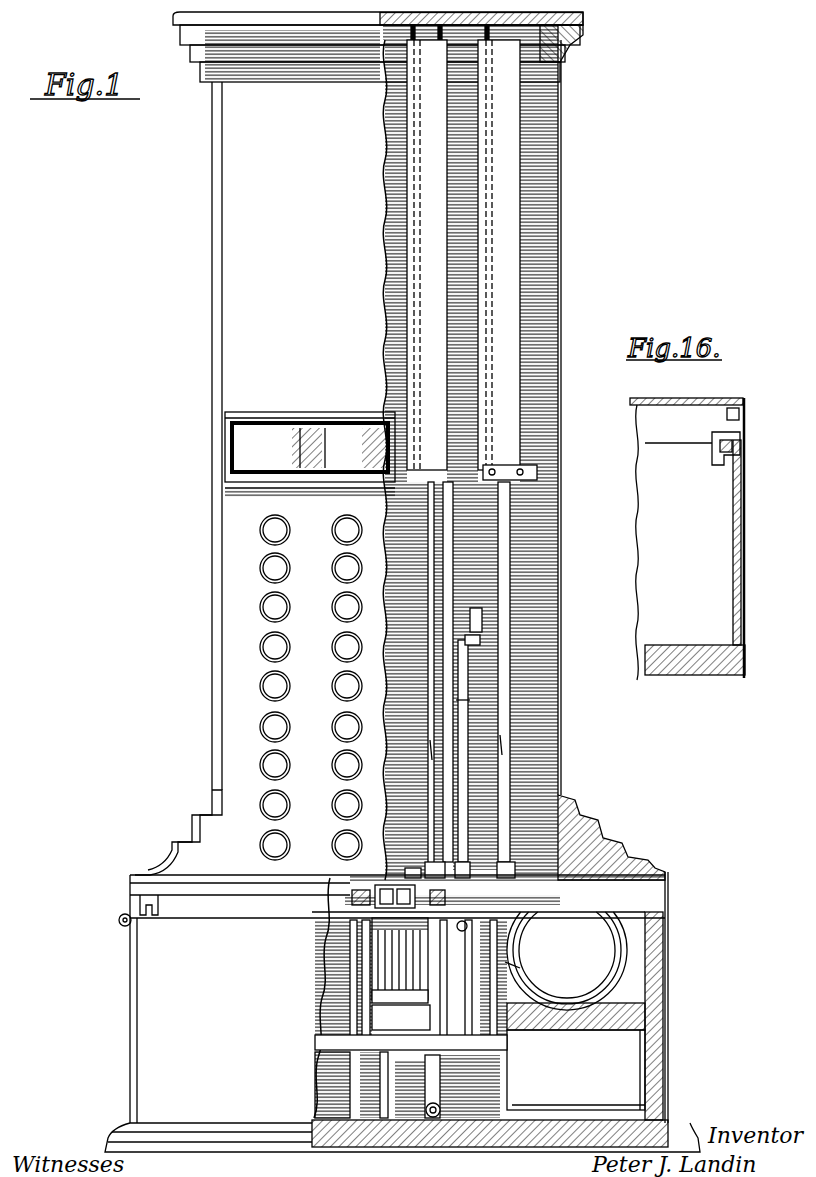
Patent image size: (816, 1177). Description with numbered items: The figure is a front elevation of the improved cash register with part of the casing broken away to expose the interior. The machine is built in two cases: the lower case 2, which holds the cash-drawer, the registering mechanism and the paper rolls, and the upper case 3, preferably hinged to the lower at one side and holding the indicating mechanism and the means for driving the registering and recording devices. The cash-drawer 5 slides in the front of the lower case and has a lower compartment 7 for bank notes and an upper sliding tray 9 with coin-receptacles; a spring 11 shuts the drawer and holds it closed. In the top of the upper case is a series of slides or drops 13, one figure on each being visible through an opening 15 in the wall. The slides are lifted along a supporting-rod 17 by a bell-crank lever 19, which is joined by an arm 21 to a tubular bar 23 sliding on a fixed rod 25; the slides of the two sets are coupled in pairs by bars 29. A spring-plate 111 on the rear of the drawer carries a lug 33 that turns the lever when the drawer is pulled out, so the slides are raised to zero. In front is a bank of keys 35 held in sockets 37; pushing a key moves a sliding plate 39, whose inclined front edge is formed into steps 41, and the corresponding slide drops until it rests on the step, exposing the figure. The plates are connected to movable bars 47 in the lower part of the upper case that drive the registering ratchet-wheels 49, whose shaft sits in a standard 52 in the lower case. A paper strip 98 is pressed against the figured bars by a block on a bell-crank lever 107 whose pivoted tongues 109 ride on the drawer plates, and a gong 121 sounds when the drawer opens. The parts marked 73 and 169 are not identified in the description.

In FIG. 1, the lower case 2 is at (133, 968).
In FIG. 16, the lower case 2 is at (746, 536).
In FIG. 1, the upper case 3 is at (552, 214).
In FIG. 16, the upper case 3 is at (684, 412).
In FIG. 1, the cash-drawer 5 is at (644, 1057).
In FIG. 16, the cash-drawer 5 is at (733, 522).
In FIG. 1, the lower compartment 7 is at (576, 1056).
In FIG. 1, the upper sliding tray 9 is at (567, 961).
In FIG. 1, the spring 11 is at (400, 1125).
In FIG. 1, the slides or drops 13 is at (418, 283).
In FIG. 1, the opening 15 is at (249, 422).
In FIG. 1, the supporting-rod 17 is at (490, 530).
In FIG. 1, the bell-crank lever 19 is at (428, 746).
In FIG. 1, the arm 21 is at (499, 746).
In FIG. 1, the tubular bar 23 is at (460, 540).
In FIG. 1, the fixed rod or support 25 is at (466, 700).
In FIG. 1, the bars 29 is at (539, 477).
In FIG. 1, the catch or lug 33 is at (499, 962).
In FIG. 1, the keys 35 is at (354, 527).
In FIG. 1, the sockets 37 is at (510, 652).
In FIG. 1, the sliding plate 39 is at (431, 500).
In FIG. 1, the steps 41 is at (420, 878).
In FIG. 1, the movable bars 47 is at (388, 872).
In FIG. 1, the ratchet-wheels 49 is at (345, 925).
In FIG. 1, the bearing or standard 52 is at (338, 1006).
In FIG. 1, the wheels 73 is at (400, 961).
In FIG. 1, the strip of paper or ribbon 98 is at (401, 1017).
In FIG. 1, the bell-crank lever 107 is at (348, 966).
In FIG. 1, the pivoted tongues 109 is at (411, 1041).
In FIG. 1, the spring-plate 111 is at (530, 975).
In FIG. 1, the gong 121 is at (332, 1085).
In FIG. 1, the rod 169 is at (358, 1038).